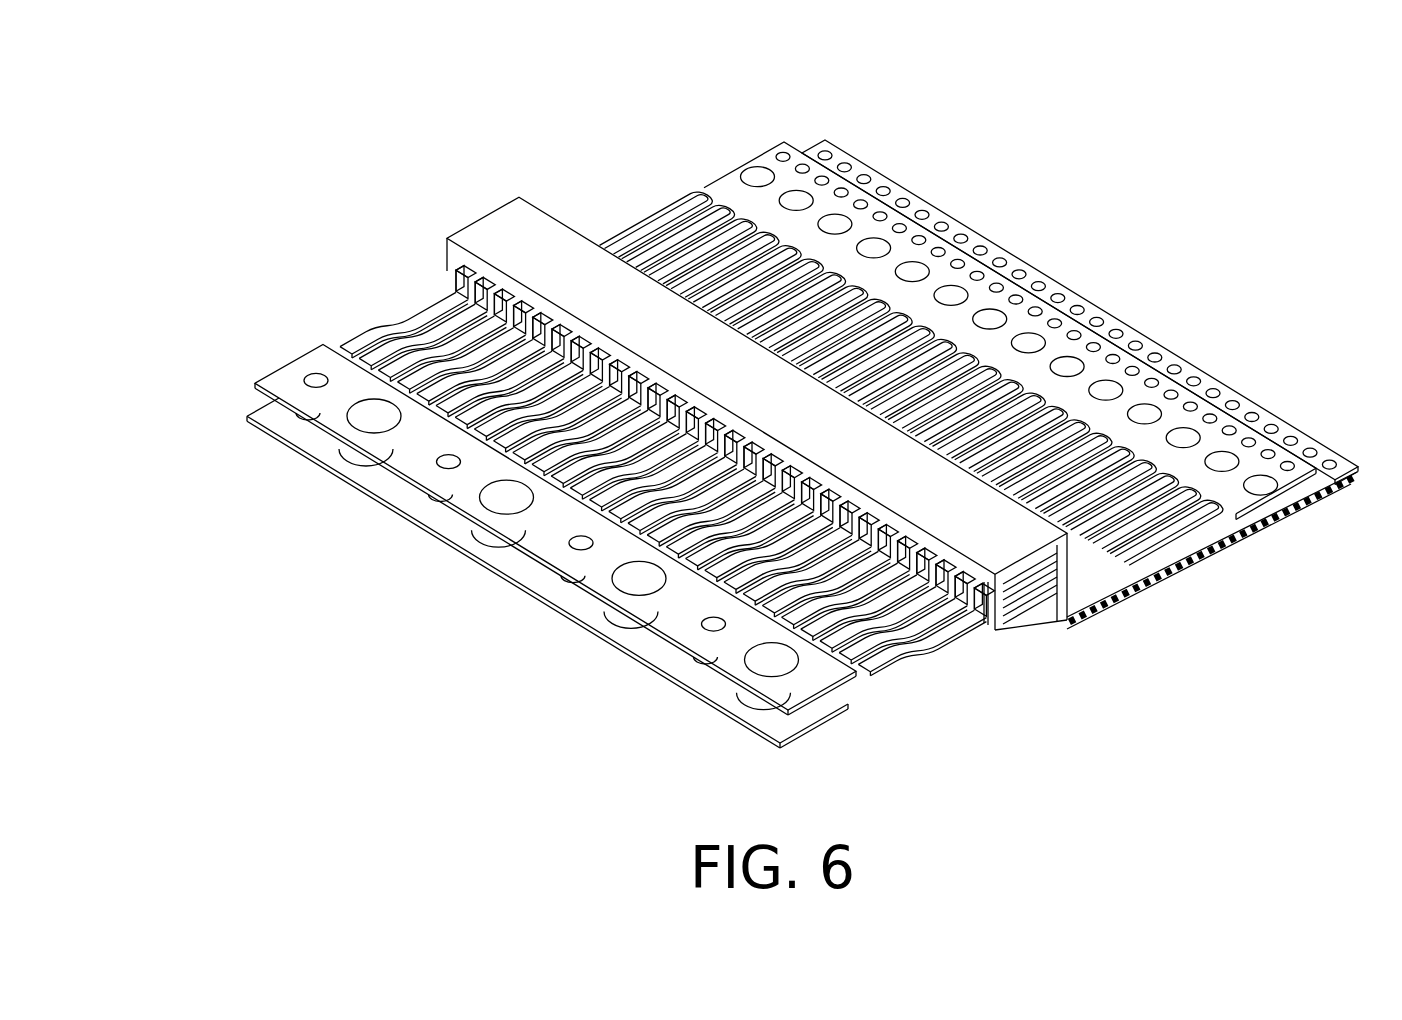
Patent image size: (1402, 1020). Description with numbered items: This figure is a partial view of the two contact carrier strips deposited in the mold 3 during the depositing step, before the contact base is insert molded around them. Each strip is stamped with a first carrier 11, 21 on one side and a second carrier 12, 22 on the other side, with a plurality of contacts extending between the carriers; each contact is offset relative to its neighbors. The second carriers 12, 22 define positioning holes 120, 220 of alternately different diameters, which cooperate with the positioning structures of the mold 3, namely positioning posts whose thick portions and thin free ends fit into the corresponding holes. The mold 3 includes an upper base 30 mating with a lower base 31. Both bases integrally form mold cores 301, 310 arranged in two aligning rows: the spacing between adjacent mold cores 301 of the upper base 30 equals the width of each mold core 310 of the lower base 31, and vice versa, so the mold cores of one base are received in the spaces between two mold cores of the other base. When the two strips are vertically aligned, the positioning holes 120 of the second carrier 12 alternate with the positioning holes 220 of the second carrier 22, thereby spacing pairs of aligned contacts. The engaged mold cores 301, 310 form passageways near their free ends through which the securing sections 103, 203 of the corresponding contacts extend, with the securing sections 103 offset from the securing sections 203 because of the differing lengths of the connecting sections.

The mold 3 is at (848, 452).
The upper base 30 is at (832, 452).
The mold core 301 is at (1013, 645).
The mold core 310 is at (983, 610).
The lower base 31 is at (1030, 637).
The securing section 103 is at (1098, 600).
The securing section 203 is at (1050, 615).
The first carrier 11 is at (787, 185).
The first carrier 21 is at (1220, 397).
The second carrier 12 is at (495, 484).
The positioning holes 120 is at (372, 417).
The second carrier 22 is at (516, 573).
The positioning holes 220 is at (352, 450).